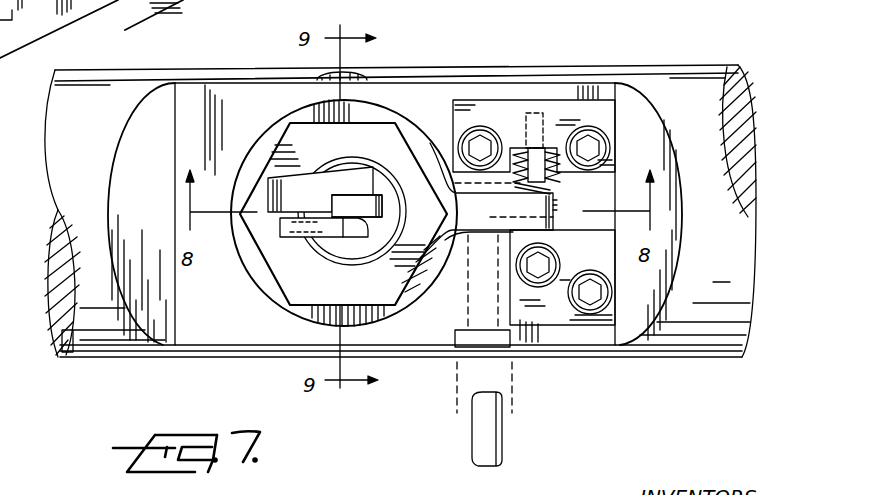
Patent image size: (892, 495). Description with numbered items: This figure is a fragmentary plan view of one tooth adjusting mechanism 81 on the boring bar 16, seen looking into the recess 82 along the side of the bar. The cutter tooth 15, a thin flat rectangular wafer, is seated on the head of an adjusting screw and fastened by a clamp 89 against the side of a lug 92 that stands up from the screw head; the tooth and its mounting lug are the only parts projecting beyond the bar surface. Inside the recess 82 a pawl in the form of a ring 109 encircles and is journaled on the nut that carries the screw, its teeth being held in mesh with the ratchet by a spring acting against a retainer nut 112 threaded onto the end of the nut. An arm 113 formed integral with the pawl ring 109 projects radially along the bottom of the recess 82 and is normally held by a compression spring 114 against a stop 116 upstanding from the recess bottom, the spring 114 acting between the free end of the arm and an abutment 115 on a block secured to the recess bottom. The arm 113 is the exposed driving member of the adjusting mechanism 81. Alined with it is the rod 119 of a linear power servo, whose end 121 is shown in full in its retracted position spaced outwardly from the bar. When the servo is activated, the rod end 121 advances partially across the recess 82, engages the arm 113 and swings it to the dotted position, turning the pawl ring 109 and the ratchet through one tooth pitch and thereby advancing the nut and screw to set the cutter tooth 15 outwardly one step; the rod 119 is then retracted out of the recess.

The boring bar 16 is at (640, 65).
The recess 82 is at (167, 127).
The adjusting mechanism 81 is at (428, 118).
The pawl ring 109 is at (303, 312).
The retainer nut 112 is at (288, 277).
The lug 92 is at (327, 183).
The cutter tooth 15 is at (380, 205).
The clamp 89 is at (292, 236).
The abutment 115 is at (557, 104).
The compression spring 114 is at (522, 148).
The arm 113 is at (553, 183).
The stop 116 is at (597, 227).
The rod 119 is at (458, 388).
The rod end 121 is at (468, 294).